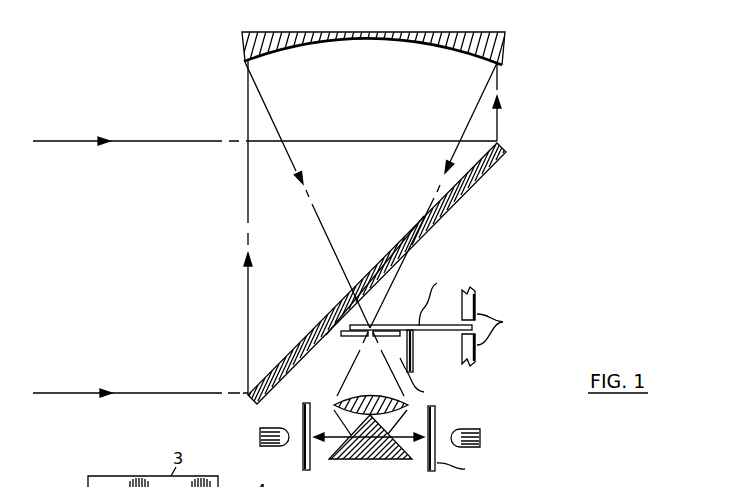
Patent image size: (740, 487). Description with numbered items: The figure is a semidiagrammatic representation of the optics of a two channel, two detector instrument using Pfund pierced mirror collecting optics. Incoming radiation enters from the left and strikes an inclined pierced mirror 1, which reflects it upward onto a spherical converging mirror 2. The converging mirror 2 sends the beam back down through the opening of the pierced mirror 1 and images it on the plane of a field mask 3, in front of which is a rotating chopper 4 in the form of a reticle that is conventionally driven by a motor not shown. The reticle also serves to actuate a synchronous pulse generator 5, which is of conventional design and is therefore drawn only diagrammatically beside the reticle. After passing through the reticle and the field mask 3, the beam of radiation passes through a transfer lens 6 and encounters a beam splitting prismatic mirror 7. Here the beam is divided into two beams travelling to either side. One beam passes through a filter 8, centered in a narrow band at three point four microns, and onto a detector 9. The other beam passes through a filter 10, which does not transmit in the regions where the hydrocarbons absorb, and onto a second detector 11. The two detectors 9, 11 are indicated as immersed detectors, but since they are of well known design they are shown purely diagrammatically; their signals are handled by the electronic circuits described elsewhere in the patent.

The inclined pierced mirror 1 is at (277, 366).
The spherical converging mirror 2 is at (437, 47).
The field mask 3 is at (355, 337).
The rotating chopper 4 is at (394, 326).
The synchronous pulse generator 5 is at (478, 346).
The transfer lens 6 is at (336, 398).
The beam splitting prismatic mirror 7 is at (368, 461).
The filter 8 is at (303, 409).
The detector 9 is at (282, 446).
The filter 10 is at (436, 426).
The detector 11 is at (481, 437).